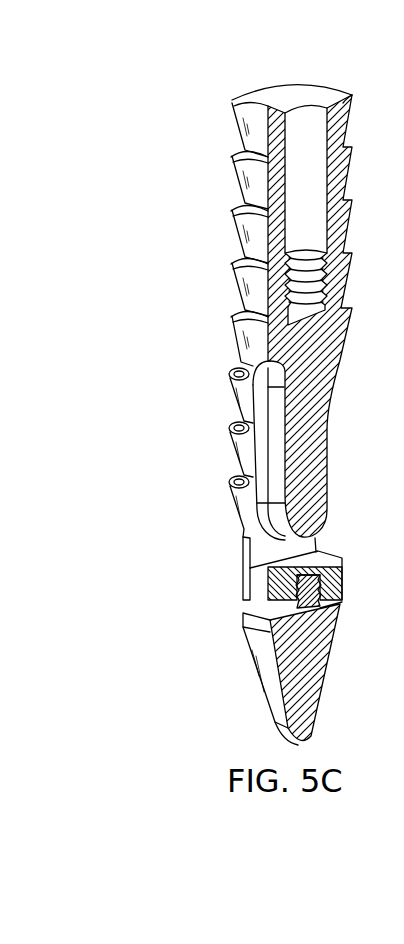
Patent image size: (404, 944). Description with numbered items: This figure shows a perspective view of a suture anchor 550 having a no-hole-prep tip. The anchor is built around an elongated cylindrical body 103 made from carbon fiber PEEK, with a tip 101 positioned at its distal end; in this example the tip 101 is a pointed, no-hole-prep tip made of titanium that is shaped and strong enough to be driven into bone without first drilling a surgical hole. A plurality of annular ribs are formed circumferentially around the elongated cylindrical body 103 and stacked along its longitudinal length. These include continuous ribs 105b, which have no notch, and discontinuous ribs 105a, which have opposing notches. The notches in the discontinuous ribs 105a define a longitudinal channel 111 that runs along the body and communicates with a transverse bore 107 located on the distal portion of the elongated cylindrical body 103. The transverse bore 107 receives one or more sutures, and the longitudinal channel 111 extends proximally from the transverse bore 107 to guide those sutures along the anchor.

The suture anchor 550 is at (220, 91).
The elongated cylindrical body 103 is at (232, 125).
The continuous ribs 105b is at (232, 266).
The discontinuous ribs 105a is at (232, 373).
The longitudinal channel 111 is at (320, 489).
The transverse bore 107 is at (258, 553).
The tip 101 is at (320, 658).